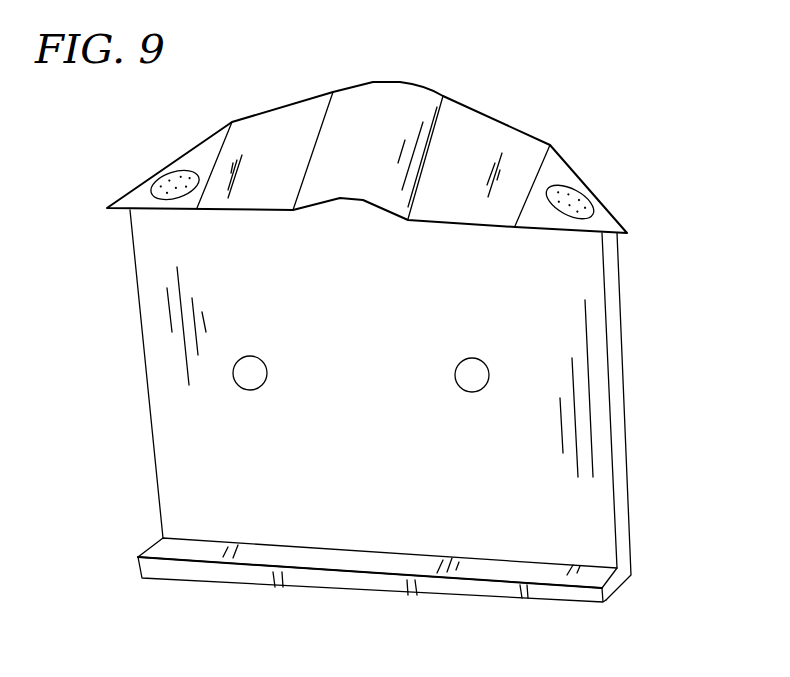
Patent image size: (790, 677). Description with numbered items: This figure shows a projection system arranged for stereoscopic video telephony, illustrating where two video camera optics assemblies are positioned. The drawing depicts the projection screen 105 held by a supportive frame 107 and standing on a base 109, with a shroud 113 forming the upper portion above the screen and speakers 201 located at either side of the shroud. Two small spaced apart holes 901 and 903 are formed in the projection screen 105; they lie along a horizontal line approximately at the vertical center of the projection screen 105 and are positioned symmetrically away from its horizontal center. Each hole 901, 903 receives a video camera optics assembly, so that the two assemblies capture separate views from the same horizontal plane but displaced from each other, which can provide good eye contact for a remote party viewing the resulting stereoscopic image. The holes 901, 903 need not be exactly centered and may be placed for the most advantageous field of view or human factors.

The shroud 113 is at (397, 80).
The speakers 201 is at (163, 178).
The projection screen 105 is at (547, 340).
The supportive frame 107 is at (618, 408).
The hole 901 is at (255, 383).
The hole 903 is at (478, 385).
The base 109 is at (603, 603).